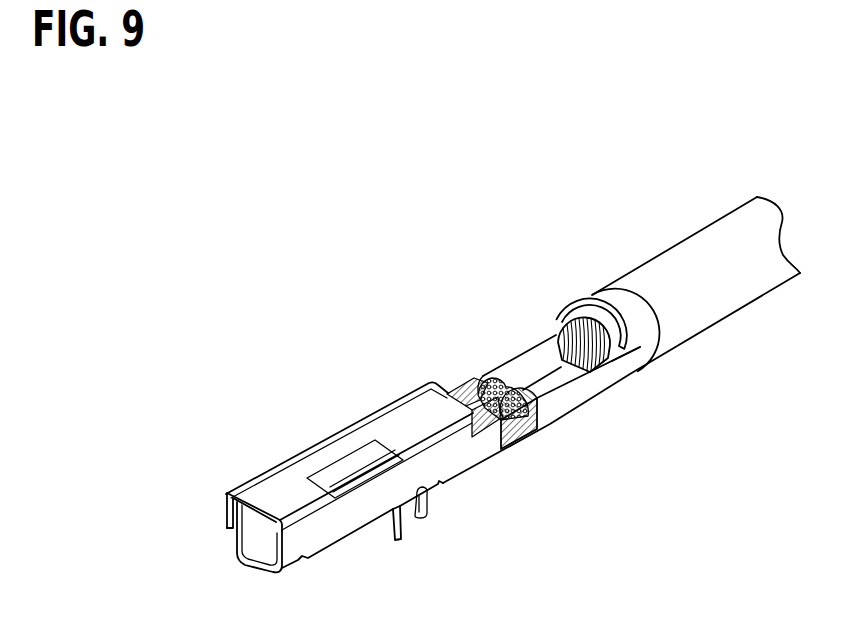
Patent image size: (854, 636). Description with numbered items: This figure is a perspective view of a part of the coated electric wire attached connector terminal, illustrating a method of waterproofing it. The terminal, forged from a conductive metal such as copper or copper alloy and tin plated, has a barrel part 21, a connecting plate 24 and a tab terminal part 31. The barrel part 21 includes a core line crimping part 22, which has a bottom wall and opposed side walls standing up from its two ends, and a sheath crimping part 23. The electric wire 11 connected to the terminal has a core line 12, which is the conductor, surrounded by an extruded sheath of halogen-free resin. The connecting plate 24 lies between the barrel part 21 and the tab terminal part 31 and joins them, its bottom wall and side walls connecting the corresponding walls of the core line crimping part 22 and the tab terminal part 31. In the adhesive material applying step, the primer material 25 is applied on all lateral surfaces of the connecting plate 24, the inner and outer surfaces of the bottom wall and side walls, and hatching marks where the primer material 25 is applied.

The electric wire 11 is at (746, 317).
The core line 12 is at (611, 359).
The barrel part 21 is at (576, 419).
The core line crimping part 22 is at (527, 357).
The sheath crimping part 23 is at (603, 295).
The connecting plate 24 is at (445, 393).
The primer material 25 is at (523, 442).
The tab terminal part 31 is at (266, 461).